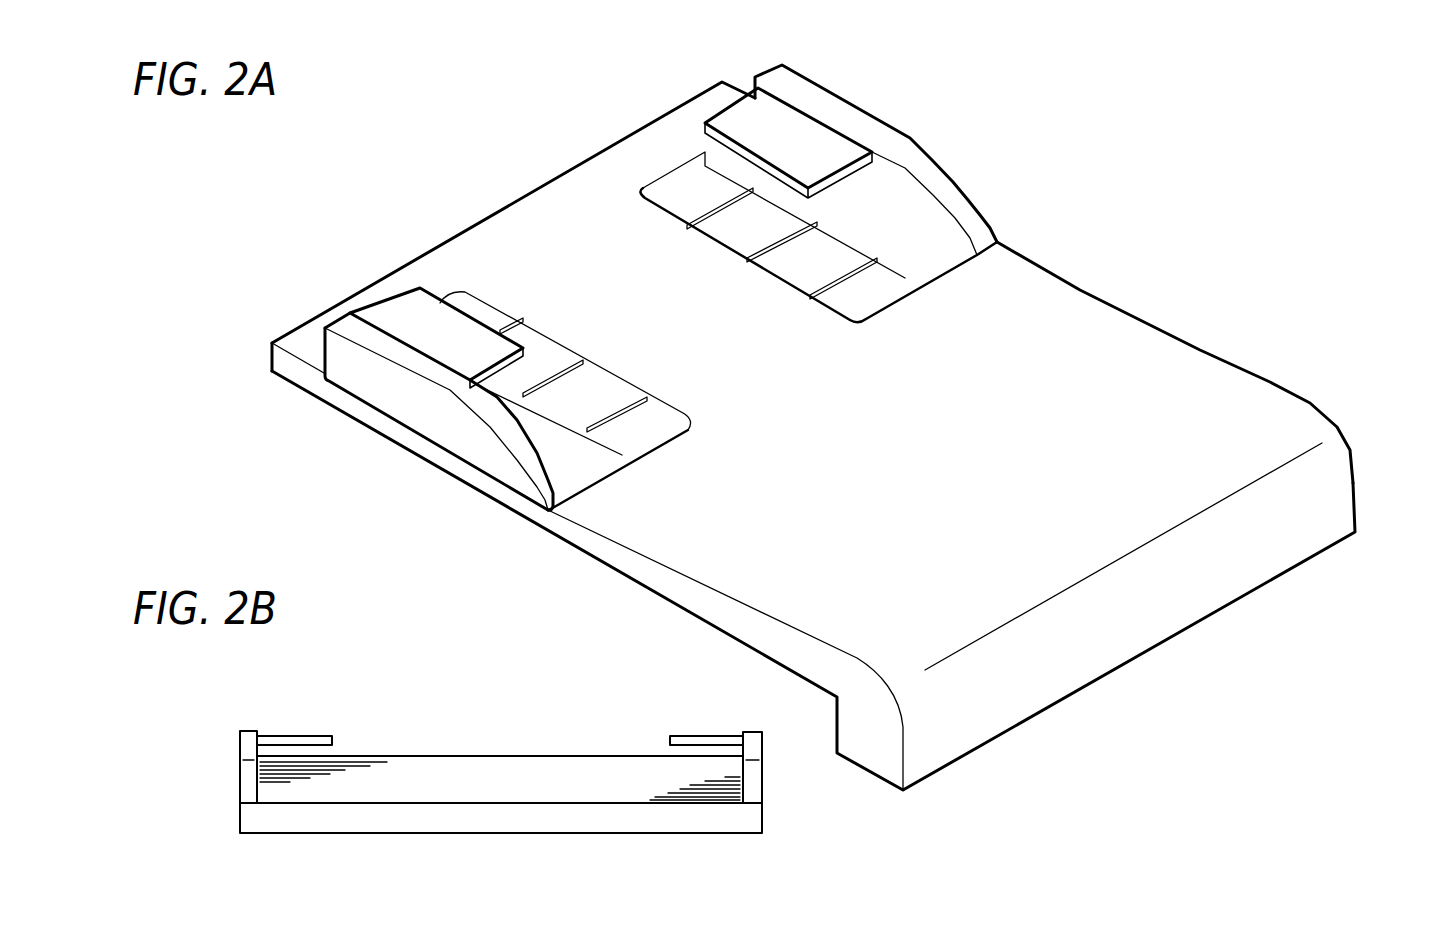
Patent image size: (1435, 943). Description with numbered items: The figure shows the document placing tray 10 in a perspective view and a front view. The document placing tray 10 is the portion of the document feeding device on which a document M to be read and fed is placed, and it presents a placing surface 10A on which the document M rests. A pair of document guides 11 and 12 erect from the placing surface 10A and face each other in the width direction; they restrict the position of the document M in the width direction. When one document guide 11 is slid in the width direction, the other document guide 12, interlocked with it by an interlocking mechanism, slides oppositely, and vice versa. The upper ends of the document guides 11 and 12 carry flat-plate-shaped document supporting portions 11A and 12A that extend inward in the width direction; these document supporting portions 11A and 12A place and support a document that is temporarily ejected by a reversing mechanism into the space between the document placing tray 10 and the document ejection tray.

In FIG. 2A, the document placing tray 10 is at (1137, 221).
In FIG. 2B, the document placing tray 10 is at (427, 693).
In FIG. 2A, the placing surface 10A is at (848, 440).
In FIG. 2B, the placing surface 10A is at (498, 802).
In FIG. 2A, the document guide 11 is at (408, 408).
In FIG. 2B, the document guide 11 is at (250, 737).
In FIG. 2A, the document supporting portion 11A is at (402, 313).
In FIG. 2B, the document supporting portion 11A is at (303, 742).
In FIG. 2A, the document guide 12 is at (911, 151).
In FIG. 2B, the document guide 12 is at (752, 737).
In FIG. 2A, the document supporting portion 12A is at (731, 120).
In FIG. 2B, the document supporting portion 12A is at (694, 742).
In FIG. 2B, the document M is at (570, 756).